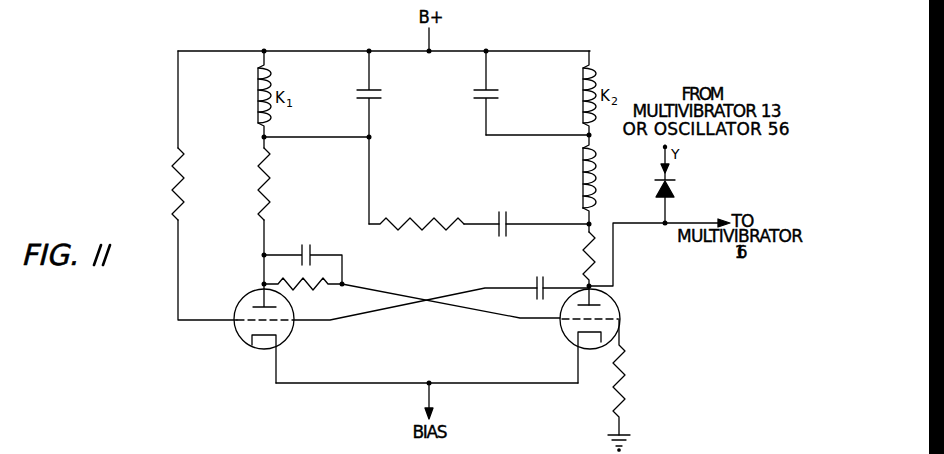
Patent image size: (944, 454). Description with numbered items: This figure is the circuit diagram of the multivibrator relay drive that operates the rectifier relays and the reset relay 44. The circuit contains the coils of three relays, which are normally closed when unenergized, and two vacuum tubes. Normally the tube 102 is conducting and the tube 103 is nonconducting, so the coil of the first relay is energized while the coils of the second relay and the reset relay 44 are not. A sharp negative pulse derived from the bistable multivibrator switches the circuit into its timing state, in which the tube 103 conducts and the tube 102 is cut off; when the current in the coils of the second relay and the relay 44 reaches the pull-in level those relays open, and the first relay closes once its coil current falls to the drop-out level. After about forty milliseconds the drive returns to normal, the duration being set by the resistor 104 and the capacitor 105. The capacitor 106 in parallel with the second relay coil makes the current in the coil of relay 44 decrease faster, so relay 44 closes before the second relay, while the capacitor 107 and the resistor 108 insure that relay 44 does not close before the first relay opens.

The tube 102 is at (232, 349).
The tube 103 is at (612, 300).
The resistor 104 is at (172, 193).
The capacitor 105 is at (541, 268).
The capacitor 106 is at (503, 93).
The capacitor 107 is at (513, 217).
The resistor 108 is at (421, 227).
The reset relay 44 is at (597, 183).